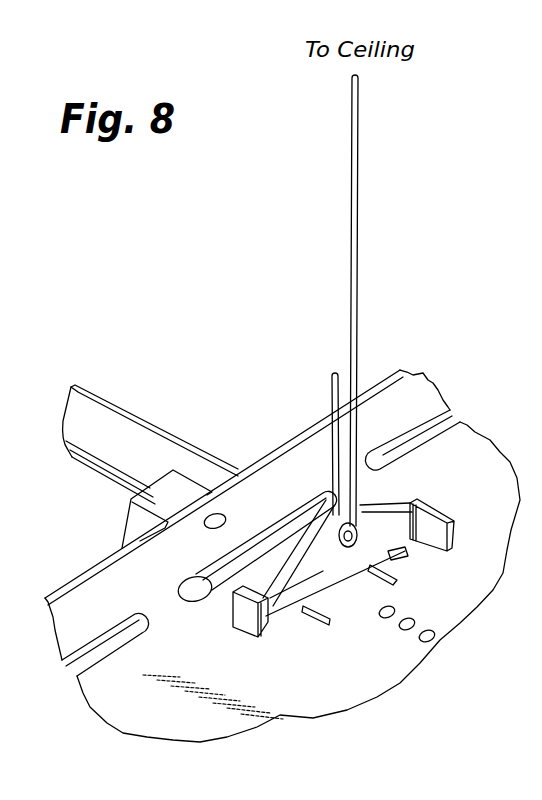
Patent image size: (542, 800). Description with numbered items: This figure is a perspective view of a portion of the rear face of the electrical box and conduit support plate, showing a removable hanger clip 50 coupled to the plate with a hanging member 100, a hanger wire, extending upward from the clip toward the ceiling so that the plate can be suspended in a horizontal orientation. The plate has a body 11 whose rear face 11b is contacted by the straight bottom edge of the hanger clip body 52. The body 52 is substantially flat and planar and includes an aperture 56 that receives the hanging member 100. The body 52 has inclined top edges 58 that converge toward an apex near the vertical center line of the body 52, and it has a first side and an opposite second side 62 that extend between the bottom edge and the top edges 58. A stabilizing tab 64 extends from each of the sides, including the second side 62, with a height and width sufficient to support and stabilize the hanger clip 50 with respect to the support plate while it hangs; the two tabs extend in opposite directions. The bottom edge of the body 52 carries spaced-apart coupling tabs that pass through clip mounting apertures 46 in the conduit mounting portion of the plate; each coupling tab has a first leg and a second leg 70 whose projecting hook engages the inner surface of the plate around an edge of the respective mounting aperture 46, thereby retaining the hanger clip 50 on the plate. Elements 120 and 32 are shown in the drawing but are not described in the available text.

The hanging member 100 is at (351, 207).
The ceiling grid T-bar 120 is at (95, 417).
The body 11 is at (286, 518).
The rear face 11b is at (500, 478).
The plate flange lip 32 is at (259, 446).
The top edge 58 is at (312, 545).
The aperture 56 is at (353, 548).
The stabilizing tab 64 is at (232, 617).
The clip mounting aperture 46 is at (292, 623).
The body 52 is at (326, 572).
The hanger clip 50 is at (326, 570).
The second side 62 is at (532, 695).
The second leg 70 is at (537, 772).